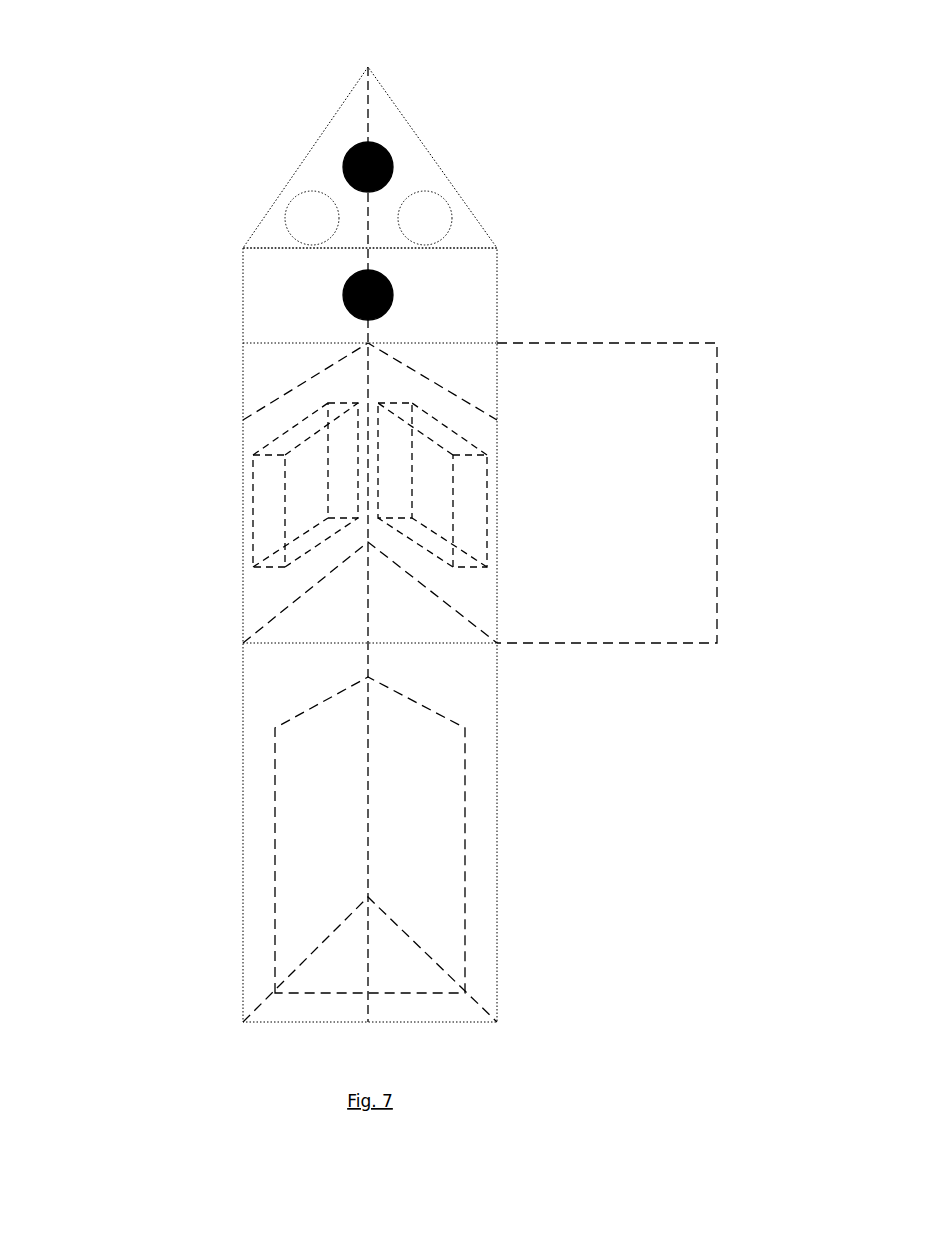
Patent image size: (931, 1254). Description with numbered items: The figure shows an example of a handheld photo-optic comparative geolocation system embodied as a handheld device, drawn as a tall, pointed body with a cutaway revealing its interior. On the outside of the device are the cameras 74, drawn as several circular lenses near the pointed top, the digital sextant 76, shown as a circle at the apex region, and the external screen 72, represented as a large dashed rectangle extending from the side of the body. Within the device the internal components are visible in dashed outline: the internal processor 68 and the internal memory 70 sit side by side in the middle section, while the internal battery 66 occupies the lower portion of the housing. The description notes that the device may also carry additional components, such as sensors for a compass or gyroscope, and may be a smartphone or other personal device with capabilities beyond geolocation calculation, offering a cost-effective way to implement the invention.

The internal battery 66 is at (405, 697).
The internal processor 68 is at (253, 482).
The internal memory 70 is at (490, 477).
The external screen 72 is at (717, 390).
The cameras 74 is at (402, 222).
The digital sextant 76 is at (393, 158).